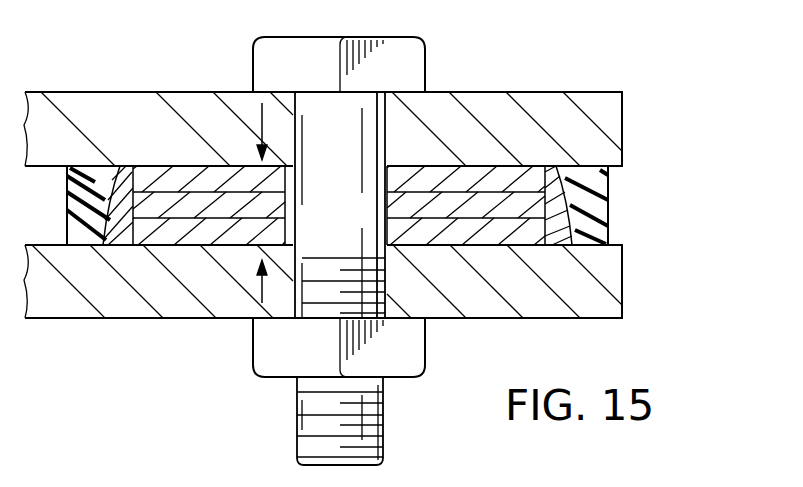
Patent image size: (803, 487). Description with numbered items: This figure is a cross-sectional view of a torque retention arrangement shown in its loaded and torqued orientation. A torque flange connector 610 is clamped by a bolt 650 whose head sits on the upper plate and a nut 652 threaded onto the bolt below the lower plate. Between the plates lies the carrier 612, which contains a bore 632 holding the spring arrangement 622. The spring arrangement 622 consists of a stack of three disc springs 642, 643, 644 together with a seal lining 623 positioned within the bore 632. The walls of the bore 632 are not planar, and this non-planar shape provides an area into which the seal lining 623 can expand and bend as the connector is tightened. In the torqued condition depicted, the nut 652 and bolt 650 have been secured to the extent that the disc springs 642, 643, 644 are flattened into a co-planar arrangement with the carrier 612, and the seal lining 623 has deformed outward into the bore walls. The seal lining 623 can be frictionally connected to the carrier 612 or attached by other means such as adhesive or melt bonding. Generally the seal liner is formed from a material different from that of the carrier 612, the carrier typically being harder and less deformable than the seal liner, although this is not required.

The torque flange connector 610 is at (640, 210).
The carrier 612 is at (621, 226).
The spring arrangement 622 is at (507, 168).
The seal lining 623 is at (563, 193).
The bore 632 is at (114, 164).
The disc spring 642 is at (213, 173).
The disc spring 643 is at (193, 212).
The disc spring 644 is at (222, 237).
The bolt 650 is at (412, 60).
The nut 652 is at (277, 358).